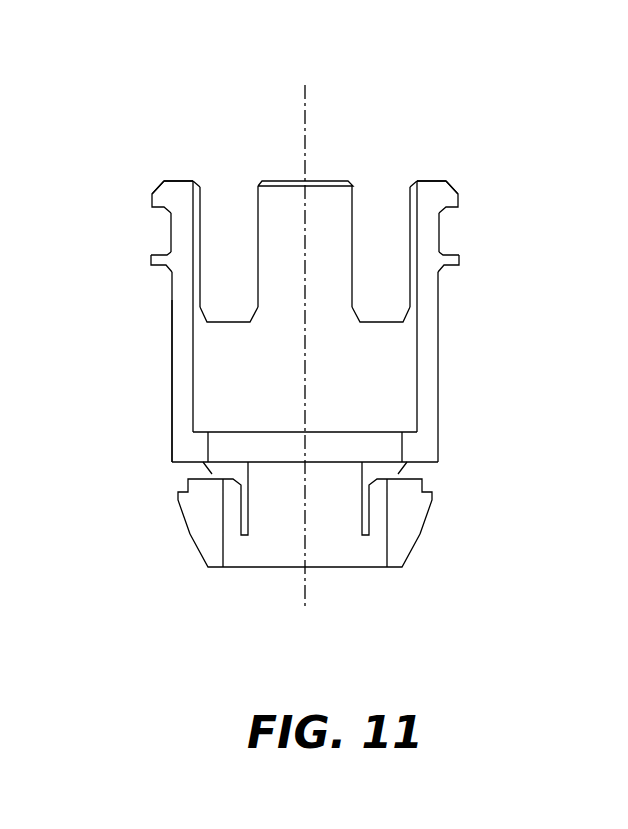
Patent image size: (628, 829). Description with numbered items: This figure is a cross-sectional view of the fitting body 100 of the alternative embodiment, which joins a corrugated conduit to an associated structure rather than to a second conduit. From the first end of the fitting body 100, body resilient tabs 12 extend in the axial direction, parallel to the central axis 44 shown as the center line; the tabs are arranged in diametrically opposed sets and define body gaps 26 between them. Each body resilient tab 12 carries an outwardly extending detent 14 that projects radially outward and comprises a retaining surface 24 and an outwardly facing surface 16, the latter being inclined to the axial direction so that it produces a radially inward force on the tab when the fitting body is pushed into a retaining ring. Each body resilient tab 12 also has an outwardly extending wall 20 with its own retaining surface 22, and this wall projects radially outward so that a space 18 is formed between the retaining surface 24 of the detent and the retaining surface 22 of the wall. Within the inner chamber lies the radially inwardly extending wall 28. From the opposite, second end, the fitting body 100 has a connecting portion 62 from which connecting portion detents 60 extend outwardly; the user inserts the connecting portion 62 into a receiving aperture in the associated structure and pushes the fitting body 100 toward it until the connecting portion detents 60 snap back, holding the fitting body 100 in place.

The body resilient tab 12 is at (172, 302).
The outwardly extending detent 14 is at (178, 186).
The outwardly facing surface 16 is at (160, 184).
The space 18 is at (171, 228).
The outwardly extending wall 20 is at (158, 264).
The retaining surface 22 is at (168, 250).
The retaining surface 24 is at (152, 213).
The body gap 26 is at (233, 250).
The radially inwardly extending wall 28 is at (375, 446).
The central axis 44 is at (305, 93).
The connecting portion detent 60 is at (177, 495).
The connecting portion 62 is at (194, 538).
The fitting body 100 is at (150, 427).